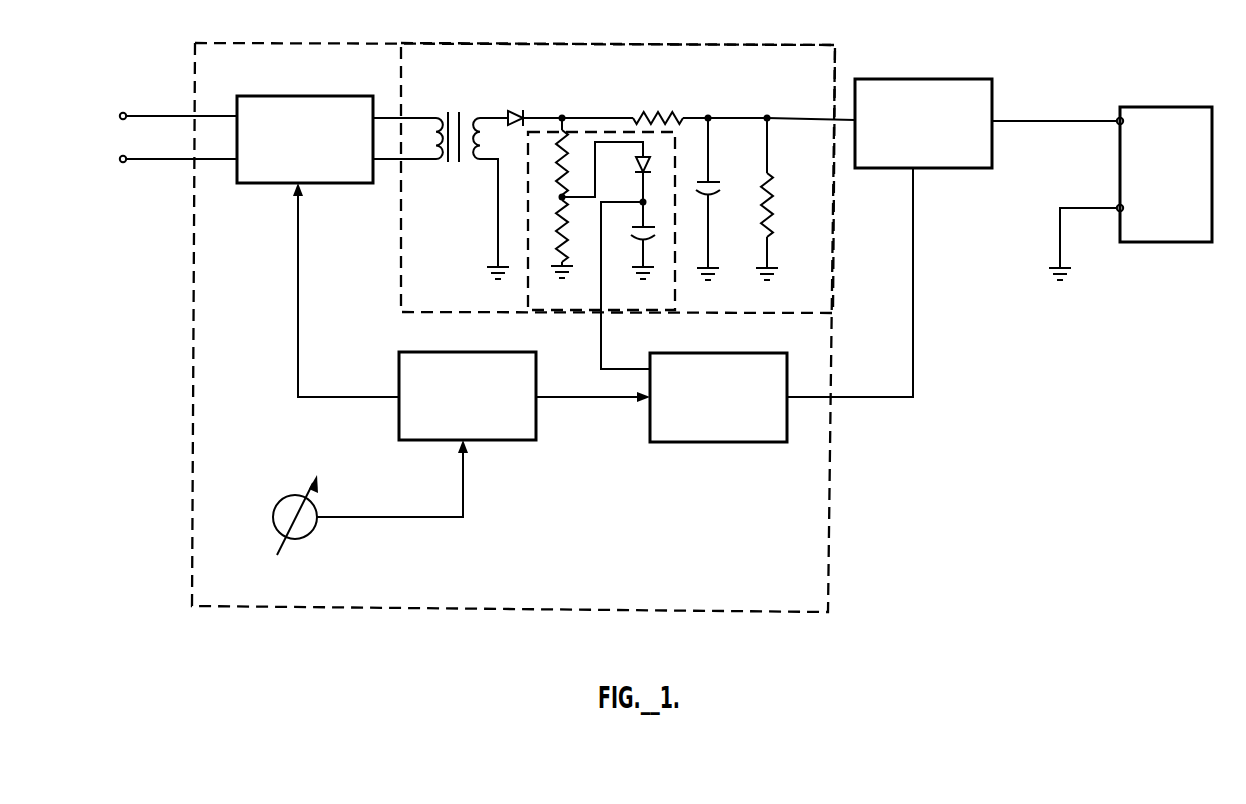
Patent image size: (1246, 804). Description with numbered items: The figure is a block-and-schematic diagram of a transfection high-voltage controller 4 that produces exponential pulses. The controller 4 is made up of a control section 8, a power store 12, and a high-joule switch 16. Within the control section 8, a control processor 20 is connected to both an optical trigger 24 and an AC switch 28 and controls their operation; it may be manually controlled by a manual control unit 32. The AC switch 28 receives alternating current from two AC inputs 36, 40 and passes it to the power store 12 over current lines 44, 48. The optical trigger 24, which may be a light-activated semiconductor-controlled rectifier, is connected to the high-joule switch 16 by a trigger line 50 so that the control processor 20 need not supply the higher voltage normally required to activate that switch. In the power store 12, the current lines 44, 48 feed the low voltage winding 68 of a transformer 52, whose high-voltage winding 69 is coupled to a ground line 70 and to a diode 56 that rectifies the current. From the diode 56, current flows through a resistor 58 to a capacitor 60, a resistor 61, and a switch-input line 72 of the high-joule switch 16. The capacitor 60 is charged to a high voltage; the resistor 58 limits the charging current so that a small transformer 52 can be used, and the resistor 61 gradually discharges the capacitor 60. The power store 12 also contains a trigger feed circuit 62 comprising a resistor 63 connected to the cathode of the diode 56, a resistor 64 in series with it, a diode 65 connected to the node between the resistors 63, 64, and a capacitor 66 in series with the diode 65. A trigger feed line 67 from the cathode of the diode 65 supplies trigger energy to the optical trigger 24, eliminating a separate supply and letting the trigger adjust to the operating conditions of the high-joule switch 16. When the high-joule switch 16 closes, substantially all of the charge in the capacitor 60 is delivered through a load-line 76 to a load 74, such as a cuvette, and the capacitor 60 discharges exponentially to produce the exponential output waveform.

The transfection high-voltage controller 4 is at (1001, 688).
The control section 8 is at (686, 612).
The power store 12 is at (795, 45).
The high-joule switch 16 is at (960, 78).
The control processor 20 is at (537, 366).
The optical trigger 24 is at (765, 353).
The AC switch 28 is at (320, 96).
The manual control unit 32 is at (273, 512).
The AC input 36 is at (119, 115).
The AC input 40 is at (119, 159).
The current line 44 is at (388, 116).
The current line 48 is at (390, 161).
The trigger line 50 is at (914, 240).
The transformer 52 is at (455, 124).
The diode 56 is at (521, 110).
The resistor 58 is at (665, 114).
The capacitor 60 is at (716, 182).
The resistor 61 is at (772, 190).
The trigger feed circuit 62 is at (578, 313).
The resistor 63 is at (560, 162).
The resistor 64 is at (560, 220).
The diode 65 is at (635, 166).
The capacitor 66 is at (646, 226).
The trigger feed line 67 is at (602, 336).
The low voltage winding 68 is at (434, 110).
The high-voltage winding 69 is at (483, 95).
The ground line 70 is at (497, 211).
The switch-input line 72 is at (793, 118).
The load 74 is at (1205, 106).
The load-line 76 is at (1049, 119).